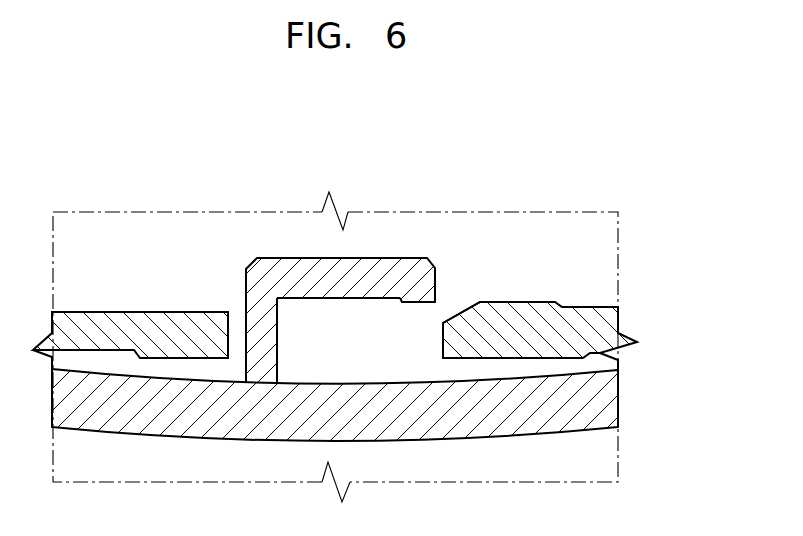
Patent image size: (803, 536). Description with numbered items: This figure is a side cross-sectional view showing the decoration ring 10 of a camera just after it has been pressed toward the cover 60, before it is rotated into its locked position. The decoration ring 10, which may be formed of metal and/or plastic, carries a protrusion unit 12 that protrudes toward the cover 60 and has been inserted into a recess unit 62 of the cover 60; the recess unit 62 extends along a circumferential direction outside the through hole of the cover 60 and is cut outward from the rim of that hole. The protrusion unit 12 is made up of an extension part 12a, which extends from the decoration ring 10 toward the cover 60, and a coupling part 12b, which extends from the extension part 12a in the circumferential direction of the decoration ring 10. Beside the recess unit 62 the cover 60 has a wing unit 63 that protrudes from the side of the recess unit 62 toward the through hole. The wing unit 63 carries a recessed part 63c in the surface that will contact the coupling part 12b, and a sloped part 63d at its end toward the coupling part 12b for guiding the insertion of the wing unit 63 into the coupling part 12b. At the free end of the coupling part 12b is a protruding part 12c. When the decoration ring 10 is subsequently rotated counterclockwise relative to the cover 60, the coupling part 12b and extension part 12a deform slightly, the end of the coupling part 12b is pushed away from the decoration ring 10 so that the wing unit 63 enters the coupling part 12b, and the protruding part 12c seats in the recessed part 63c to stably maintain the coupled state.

The decoration ring 10 is at (622, 405).
The protrusion unit 12 is at (313, 241).
The extension part 12a is at (272, 340).
The coupling part 12b is at (388, 268).
The protruding part 12c is at (423, 262).
The cover 60 is at (622, 325).
The recess unit 62 is at (228, 335).
The wing unit 63 is at (524, 317).
The recessed part 63c is at (584, 307).
The sloped part 63d is at (465, 307).